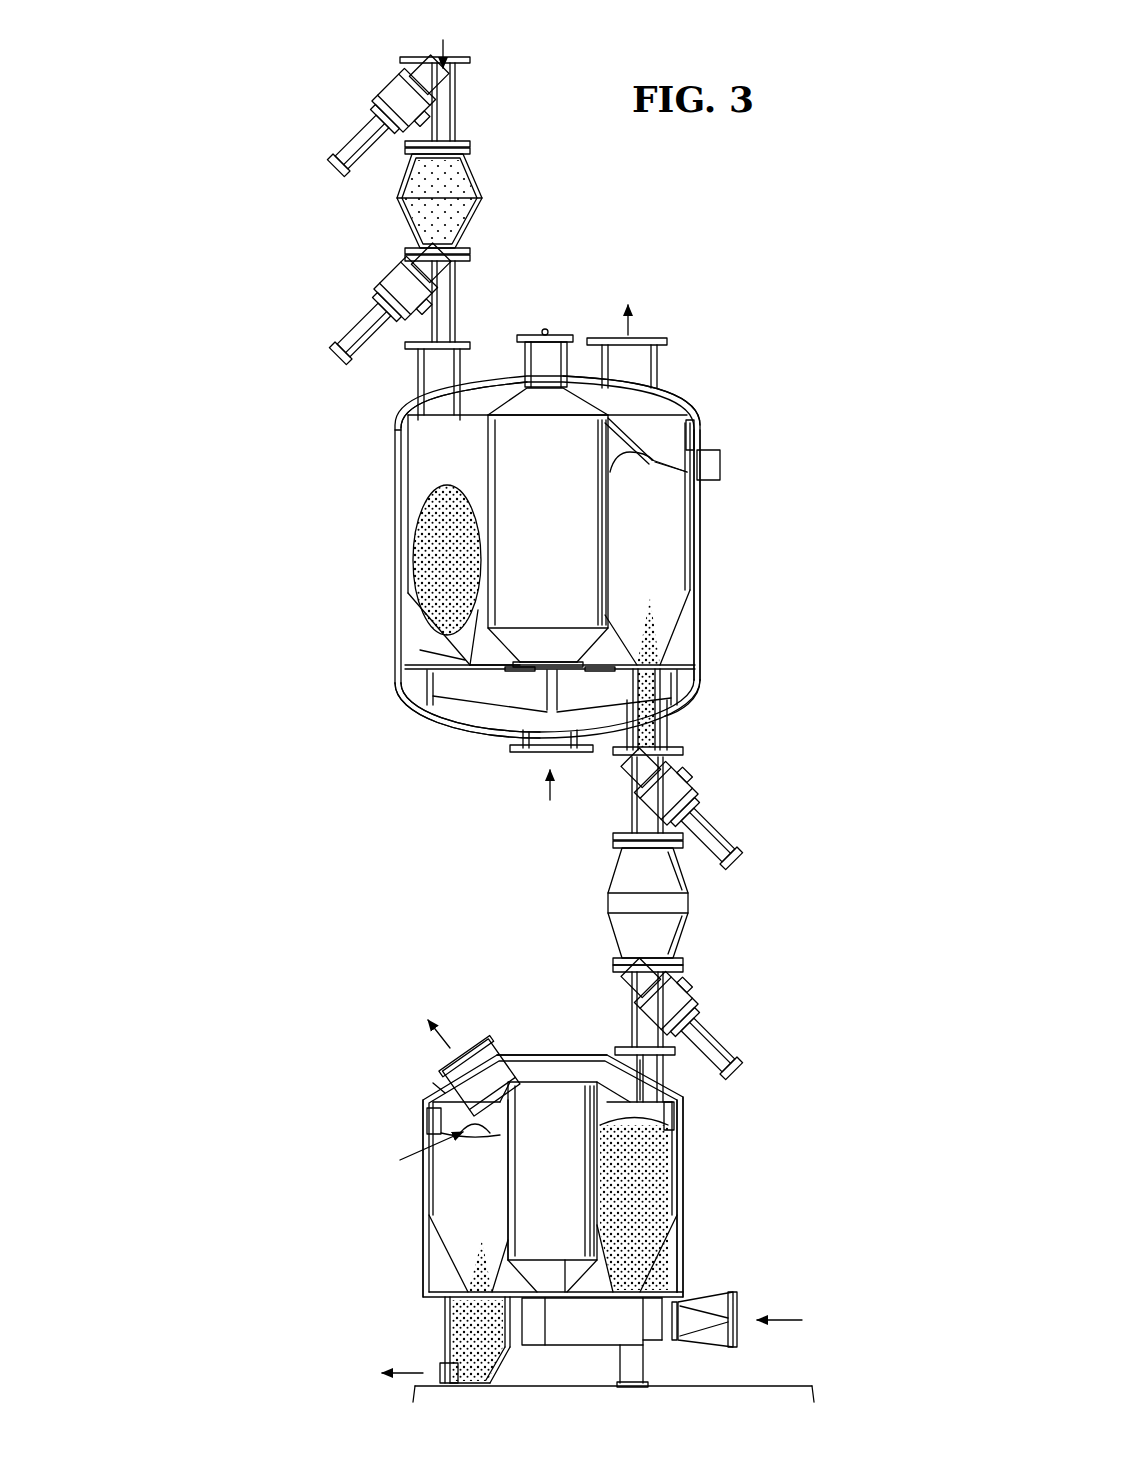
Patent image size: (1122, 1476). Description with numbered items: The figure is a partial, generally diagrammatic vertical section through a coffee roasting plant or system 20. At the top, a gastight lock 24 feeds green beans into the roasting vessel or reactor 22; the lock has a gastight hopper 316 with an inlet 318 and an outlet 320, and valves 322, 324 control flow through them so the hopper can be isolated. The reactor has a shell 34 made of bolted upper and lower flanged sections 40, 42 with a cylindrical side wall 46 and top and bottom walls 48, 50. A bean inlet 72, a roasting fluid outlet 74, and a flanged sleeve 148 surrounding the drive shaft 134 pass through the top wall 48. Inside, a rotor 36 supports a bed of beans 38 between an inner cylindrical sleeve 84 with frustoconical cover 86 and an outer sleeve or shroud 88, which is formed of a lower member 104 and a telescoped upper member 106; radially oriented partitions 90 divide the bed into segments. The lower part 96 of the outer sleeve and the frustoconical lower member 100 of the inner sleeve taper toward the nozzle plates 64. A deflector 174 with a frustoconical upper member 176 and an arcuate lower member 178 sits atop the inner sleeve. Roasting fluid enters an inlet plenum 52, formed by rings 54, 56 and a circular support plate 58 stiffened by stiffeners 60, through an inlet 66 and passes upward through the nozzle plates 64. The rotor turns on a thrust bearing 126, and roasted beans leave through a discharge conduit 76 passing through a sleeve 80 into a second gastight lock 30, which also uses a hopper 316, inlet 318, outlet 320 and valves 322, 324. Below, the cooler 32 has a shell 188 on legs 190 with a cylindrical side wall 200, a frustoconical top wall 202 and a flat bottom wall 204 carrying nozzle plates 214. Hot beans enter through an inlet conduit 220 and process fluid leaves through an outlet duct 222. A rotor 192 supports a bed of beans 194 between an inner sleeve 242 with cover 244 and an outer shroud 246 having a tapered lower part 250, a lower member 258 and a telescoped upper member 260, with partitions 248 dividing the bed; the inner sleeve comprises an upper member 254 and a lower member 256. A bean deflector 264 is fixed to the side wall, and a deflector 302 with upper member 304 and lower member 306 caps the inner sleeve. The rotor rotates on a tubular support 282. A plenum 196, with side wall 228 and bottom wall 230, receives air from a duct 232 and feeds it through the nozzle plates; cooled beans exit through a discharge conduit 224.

The coffee roasting plant or system 20 is at (283, 510).
The roasting vessel or reactor 22 is at (386, 602).
The gastight lock 24 is at (378, 206).
The second gastight lock 30 is at (600, 893).
The second reactor or cooler 32 is at (386, 1127).
The shell 34 is at (704, 640).
The rotatable movable assembly or rotor 36 is at (625, 386).
The bed of beans 38 is at (402, 545).
The upper flanged shell section 40 is at (700, 406).
The lower flanged shell section 42 is at (706, 690).
The cylindrical side wall 46 is at (700, 608).
The top wall 48 is at (660, 395).
The bottom wall 50 is at (665, 712).
The inlet plenum 52 is at (470, 710).
The upper angle-sectioned ring 54 is at (420, 672).
The lower angle-sectioned ring 56 is at (410, 698).
The circular support plate 58 is at (420, 655).
The radially extending stiffeners 60 is at (552, 691).
The nozzle plates 64 is at (495, 655).
The inlet 66 is at (520, 748).
The inlet for green beans 72 is at (416, 382).
The outlet for roasting fluid 74 is at (660, 354).
The discharge conduit 76 is at (665, 698).
The sleeve 80 is at (672, 734).
The inner cylindrical sleeve 84 is at (610, 548).
The frustoconical cover 86 is at (497, 410).
The outer cylindrical sleeve or shroud 88 is at (704, 560).
The radially oriented partitions 90 is at (425, 445).
The lower part of outer sleeve 96 is at (655, 648).
The frustoconical lower member 100 is at (578, 675).
The lower member of outer sleeve 104 is at (702, 478).
The telescoped upper member 106 is at (700, 420).
The thrust bearing 126 is at (520, 676).
The drive shaft 134 is at (544, 329).
The flanged sleeve 148 is at (523, 358).
The deflector 174 is at (662, 466).
The frustoconical upper member 176 is at (618, 440).
The arcuately sectioned annular lower member 178 is at (612, 470).
The shell 188 is at (685, 1190).
The legs 190 is at (622, 1362).
The rotatable movable assembly or rotor 192 is at (612, 1090).
The bed of beans 194 is at (658, 1226).
The boxlike sheet metal plenum 196 is at (433, 1315).
The cylindrical side wall 200 is at (422, 1228).
The frustoconical top wall 202 is at (512, 1056).
The flat bottom wall 204 is at (592, 1321).
The nozzle or orifice plates 214 is at (462, 1287).
The inlet conduit 220 is at (664, 1062).
The outlet duct 222 is at (432, 1076).
The discharge conduit 224 is at (452, 1368).
The side wall 228 is at (672, 1332).
The flat bottom wall 230 is at (447, 1348).
The duct 232 is at (733, 1298).
The inner cylindrical sleeve 242 is at (565, 1187).
The frustoconical cover 244 is at (504, 1055).
The outer cylindrical sleeve or shroud 246 is at (685, 1165).
The radially oriented partitions 248 is at (552, 1158).
The lower part of outer rotor sleeve 250 is at (652, 1270).
The upper member of inner sleeve 254 is at (506, 1212).
The lower member of inner sleeve 256 is at (566, 1284).
The lower member of outer sleeve 258 is at (668, 1200).
The telescoped upper member 260 is at (680, 1111).
The annular sheet metal bean deflector 264 is at (684, 1138).
The tubular support or tube 282 is at (548, 1282).
The deflector 302 is at (422, 1141).
The frustoconical upper member 304 is at (490, 1108).
The arcuately sectioned lower member 306 is at (500, 1136).
The gastight hopper 316 is at (480, 186).
The inlet 318 is at (452, 142).
The outlet 320 is at (462, 240).
The valve 322 is at (376, 108).
The valve 324 is at (378, 300).